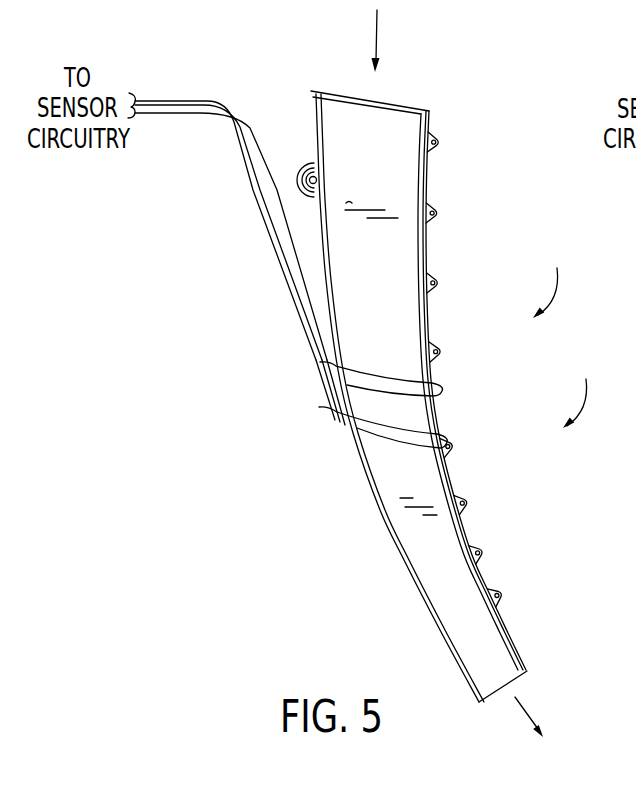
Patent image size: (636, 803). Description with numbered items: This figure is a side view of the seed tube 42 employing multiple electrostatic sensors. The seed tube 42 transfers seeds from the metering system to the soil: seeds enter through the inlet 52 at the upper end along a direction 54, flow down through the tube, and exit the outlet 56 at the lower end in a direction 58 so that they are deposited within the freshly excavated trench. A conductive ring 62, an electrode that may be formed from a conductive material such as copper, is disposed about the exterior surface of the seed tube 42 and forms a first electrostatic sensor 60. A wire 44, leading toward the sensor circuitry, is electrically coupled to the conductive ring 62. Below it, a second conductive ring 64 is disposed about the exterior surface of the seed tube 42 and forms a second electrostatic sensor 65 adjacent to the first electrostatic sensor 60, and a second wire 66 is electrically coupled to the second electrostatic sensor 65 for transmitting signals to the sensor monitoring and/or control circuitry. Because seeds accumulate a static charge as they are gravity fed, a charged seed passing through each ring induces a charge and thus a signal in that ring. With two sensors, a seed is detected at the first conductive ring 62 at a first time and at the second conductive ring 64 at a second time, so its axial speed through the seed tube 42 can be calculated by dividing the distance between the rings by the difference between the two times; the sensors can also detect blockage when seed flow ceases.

The seed tube 42 is at (435, 183).
The wire 44 is at (318, 332).
The inlet 52 is at (318, 92).
The direction 54 is at (378, 38).
The outlet 56 is at (528, 673).
The direction 58 is at (527, 713).
The electrostatic sensor 60 is at (552, 278).
The conductive ring 62 is at (438, 382).
The second conductive ring 64 is at (443, 431).
The second electrostatic sensor 65 is at (582, 388).
The second wire 66 is at (335, 400).